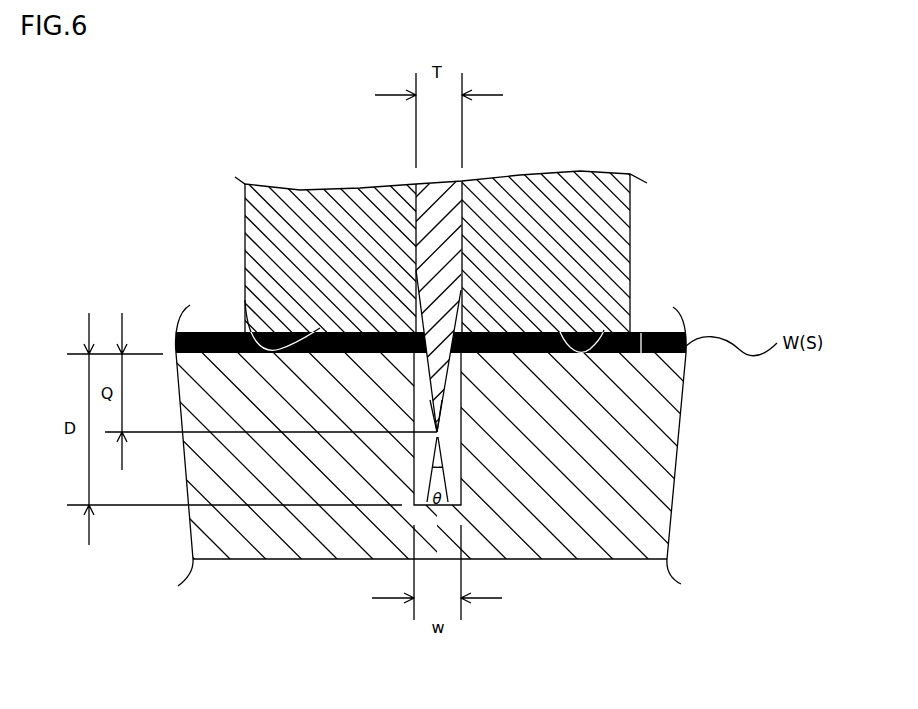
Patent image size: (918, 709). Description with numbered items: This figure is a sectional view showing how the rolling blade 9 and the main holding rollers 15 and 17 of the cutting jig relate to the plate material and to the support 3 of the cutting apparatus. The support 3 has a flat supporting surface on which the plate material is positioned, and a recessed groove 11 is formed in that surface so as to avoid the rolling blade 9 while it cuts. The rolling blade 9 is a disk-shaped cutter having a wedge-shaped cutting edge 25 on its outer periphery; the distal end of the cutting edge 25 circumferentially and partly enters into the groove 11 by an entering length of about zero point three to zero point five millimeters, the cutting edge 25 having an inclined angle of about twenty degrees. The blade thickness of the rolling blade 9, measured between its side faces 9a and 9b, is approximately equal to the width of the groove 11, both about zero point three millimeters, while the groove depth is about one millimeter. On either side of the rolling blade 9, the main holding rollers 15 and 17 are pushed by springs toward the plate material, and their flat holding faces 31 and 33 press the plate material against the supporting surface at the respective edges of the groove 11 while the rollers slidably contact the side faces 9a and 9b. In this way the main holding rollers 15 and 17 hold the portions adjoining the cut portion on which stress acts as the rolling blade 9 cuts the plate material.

The support 3 is at (648, 449).
The rolling blade 9 is at (462, 238).
The side face 9a is at (417, 212).
The side face 9b is at (463, 222).
The groove 11 is at (463, 467).
The main holding roller 15 is at (316, 212).
The main holding roller 17 is at (567, 181).
The cutting edge 25 is at (445, 397).
The holding face 31 is at (247, 330).
The holding face 33 is at (604, 330).